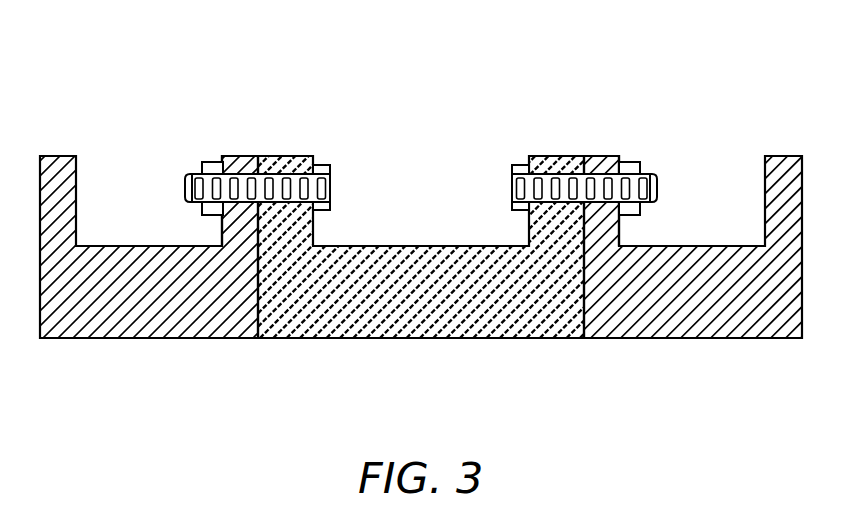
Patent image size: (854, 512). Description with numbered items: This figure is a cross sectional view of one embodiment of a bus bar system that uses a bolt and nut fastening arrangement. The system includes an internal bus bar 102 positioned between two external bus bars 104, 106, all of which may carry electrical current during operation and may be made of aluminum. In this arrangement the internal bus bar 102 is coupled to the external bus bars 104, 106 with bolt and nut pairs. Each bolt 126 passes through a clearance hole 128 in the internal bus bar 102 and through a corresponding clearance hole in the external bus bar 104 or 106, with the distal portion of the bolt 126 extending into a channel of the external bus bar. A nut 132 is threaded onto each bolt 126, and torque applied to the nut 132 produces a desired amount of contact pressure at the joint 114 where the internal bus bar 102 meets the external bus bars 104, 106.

The internal bus bar 102 is at (508, 320).
The external bus bar 104 is at (147, 323).
The external bus bar 106 is at (705, 320).
The joint 114 is at (258, 124).
The bolt 126 is at (331, 190).
The clearance hole 128 is at (238, 146).
The nut 132 is at (211, 166).